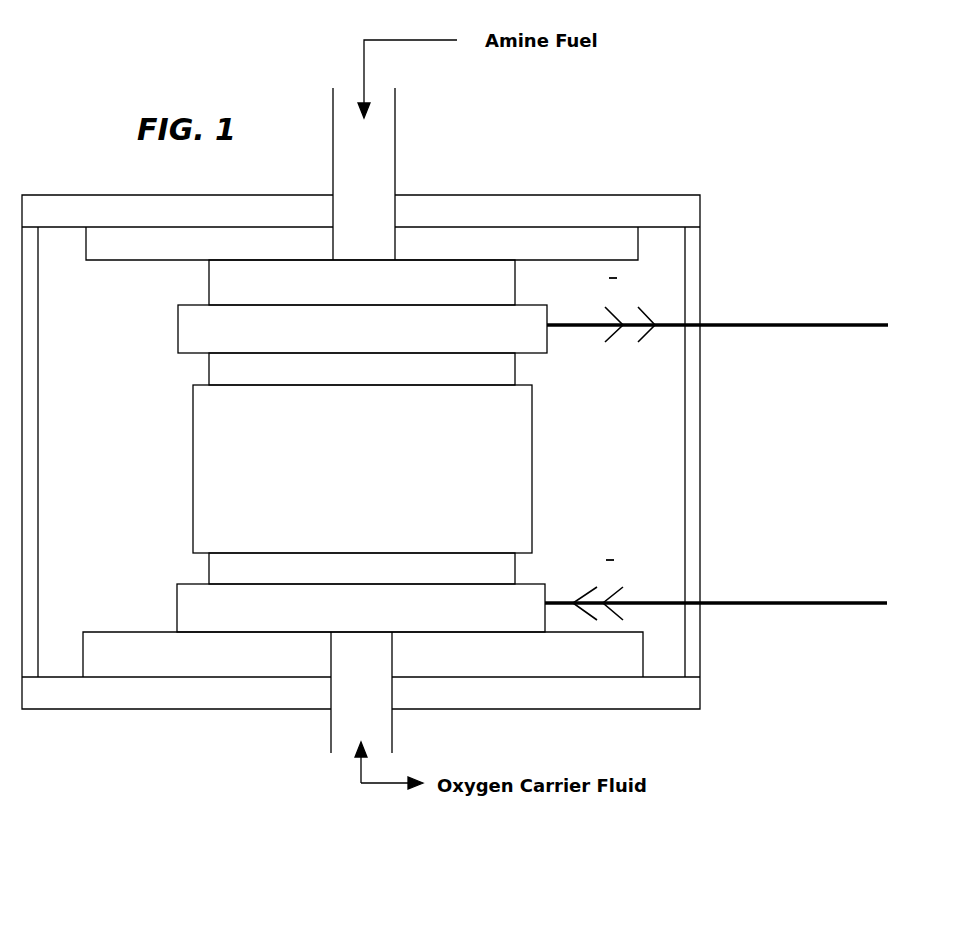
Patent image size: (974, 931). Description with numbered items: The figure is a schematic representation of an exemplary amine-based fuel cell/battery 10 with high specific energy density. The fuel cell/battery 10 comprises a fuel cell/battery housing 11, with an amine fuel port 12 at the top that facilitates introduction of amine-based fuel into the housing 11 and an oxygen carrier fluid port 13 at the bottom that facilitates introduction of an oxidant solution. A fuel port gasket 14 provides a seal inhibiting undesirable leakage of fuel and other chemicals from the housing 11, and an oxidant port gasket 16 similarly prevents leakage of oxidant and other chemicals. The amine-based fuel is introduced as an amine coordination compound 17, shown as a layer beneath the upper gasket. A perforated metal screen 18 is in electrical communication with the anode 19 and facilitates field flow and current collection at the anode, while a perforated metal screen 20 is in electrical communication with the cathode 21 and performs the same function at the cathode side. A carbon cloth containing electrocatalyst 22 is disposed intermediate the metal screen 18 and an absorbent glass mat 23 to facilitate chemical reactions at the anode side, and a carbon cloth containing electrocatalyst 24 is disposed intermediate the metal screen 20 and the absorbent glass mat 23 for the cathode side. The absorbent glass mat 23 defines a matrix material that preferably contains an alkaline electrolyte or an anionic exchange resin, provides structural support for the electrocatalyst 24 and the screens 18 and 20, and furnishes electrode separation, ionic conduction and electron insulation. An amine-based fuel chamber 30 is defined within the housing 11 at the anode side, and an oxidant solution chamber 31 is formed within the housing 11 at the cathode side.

The amine-based fuel cell/battery 10 is at (474, 425).
The fuel cell/battery housing 11 is at (700, 258).
The amine fuel port 12 is at (395, 153).
The oxygen carrier fluid port 13 is at (392, 733).
The fuel port gasket 14 is at (477, 243).
The oxidant port gasket 16 is at (275, 663).
The amine coordination compound 17 is at (208, 275).
The perforated metal screen 18 is at (178, 327).
The anode 19 is at (870, 330).
The perforated metal screen 20 is at (177, 604).
The cathode 21 is at (857, 608).
The carbon cloth containing electrocatalyst 22 is at (515, 365).
The absorbent glass mat 23 is at (532, 490).
The carbon cloth containing electrocatalyst 24 is at (515, 573).
The amine-based fuel chamber 30 is at (110, 347).
The oxidant solution chamber 31 is at (93, 570).